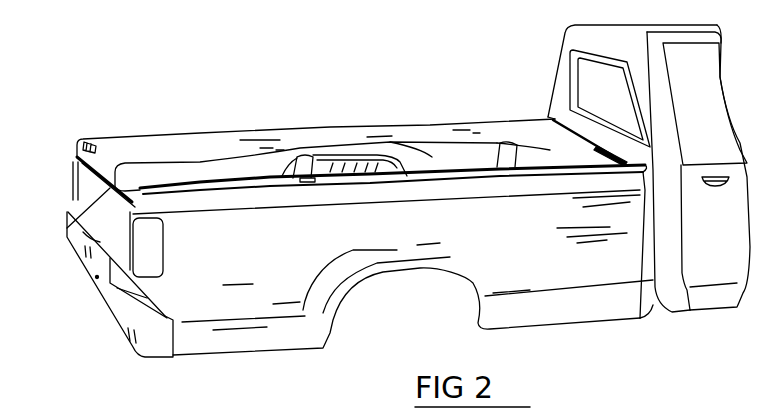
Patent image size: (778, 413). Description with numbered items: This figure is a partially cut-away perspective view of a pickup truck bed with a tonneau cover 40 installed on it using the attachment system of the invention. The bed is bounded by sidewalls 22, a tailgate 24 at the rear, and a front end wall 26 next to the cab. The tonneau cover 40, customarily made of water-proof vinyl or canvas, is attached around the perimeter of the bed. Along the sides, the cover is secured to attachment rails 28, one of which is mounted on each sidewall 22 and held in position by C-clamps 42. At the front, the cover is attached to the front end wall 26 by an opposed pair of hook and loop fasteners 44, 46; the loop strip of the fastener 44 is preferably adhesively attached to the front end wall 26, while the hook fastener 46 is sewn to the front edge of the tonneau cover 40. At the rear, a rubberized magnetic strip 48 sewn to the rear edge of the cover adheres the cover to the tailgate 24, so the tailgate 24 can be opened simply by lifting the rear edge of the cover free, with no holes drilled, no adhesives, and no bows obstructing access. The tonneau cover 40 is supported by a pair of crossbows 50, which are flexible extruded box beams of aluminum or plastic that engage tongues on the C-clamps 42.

The sidewall 22 is at (470, 224).
The tailgate 24 is at (88, 190).
The front end wall 26 is at (592, 157).
The attachment rail 28 is at (408, 178).
The tonneau cover 40 is at (173, 147).
The C-clamp 42 is at (320, 165).
The loop fastener 44 is at (606, 148).
The hook fastener 46 is at (590, 146).
The rubberized magnetic strip 48 is at (75, 223).
The crossbow 50 is at (307, 158).